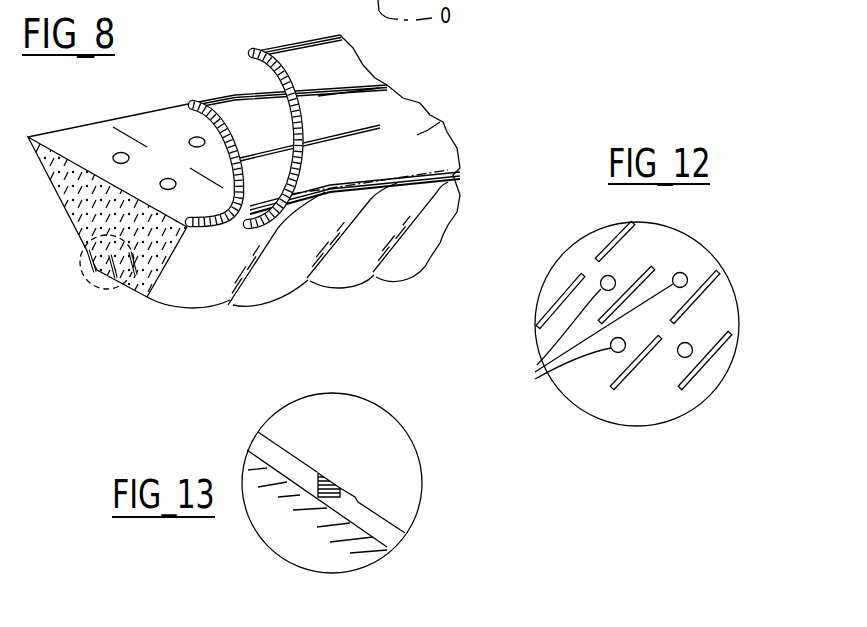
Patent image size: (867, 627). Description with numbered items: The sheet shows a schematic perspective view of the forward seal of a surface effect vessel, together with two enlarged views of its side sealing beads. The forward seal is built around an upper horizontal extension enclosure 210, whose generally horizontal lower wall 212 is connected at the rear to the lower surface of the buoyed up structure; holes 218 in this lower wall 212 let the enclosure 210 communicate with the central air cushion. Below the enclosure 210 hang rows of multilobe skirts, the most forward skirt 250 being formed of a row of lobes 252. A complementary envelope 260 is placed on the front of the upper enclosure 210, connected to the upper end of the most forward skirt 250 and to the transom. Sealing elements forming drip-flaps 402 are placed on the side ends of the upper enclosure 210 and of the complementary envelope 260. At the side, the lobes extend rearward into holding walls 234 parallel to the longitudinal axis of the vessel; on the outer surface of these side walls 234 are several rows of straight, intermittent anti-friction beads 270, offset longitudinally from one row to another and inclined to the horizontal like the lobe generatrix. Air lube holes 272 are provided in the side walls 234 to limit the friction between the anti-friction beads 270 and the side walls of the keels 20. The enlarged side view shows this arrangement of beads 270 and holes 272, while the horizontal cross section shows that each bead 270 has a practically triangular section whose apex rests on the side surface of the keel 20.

In FIG. 13, the side keel 20 is at (281, 520).
In FIG. 8, the upper horizontal extension enclosure 210 is at (245, 103).
In FIG. 8, the lower wall 212 is at (150, 128).
In FIG. 8, the holes 218 is at (161, 184).
In FIG. 8, the holding wall 234 is at (73, 225).
In FIG. 12, the holding wall 234 is at (594, 396).
In FIG. 13, the holding wall 234 is at (307, 462).
In FIG. 8, the most forward skirt 250 is at (228, 333).
In FIG. 8, the lobes 252 is at (290, 278).
In FIG. 8, the complementary envelope 260 is at (443, 122).
In FIG. 8, the anti-friction beads 270 is at (133, 270).
In FIG. 12, the anti-friction beads 270 is at (562, 296).
In FIG. 13, the anti-friction beads 270 is at (405, 535).
In FIG. 8, the air lube holes 272 is at (80, 258).
In FIG. 12, the air lube holes 272 is at (744, 306).
In FIG. 8, the sealing elements forming drip-flaps 402 is at (237, 136).